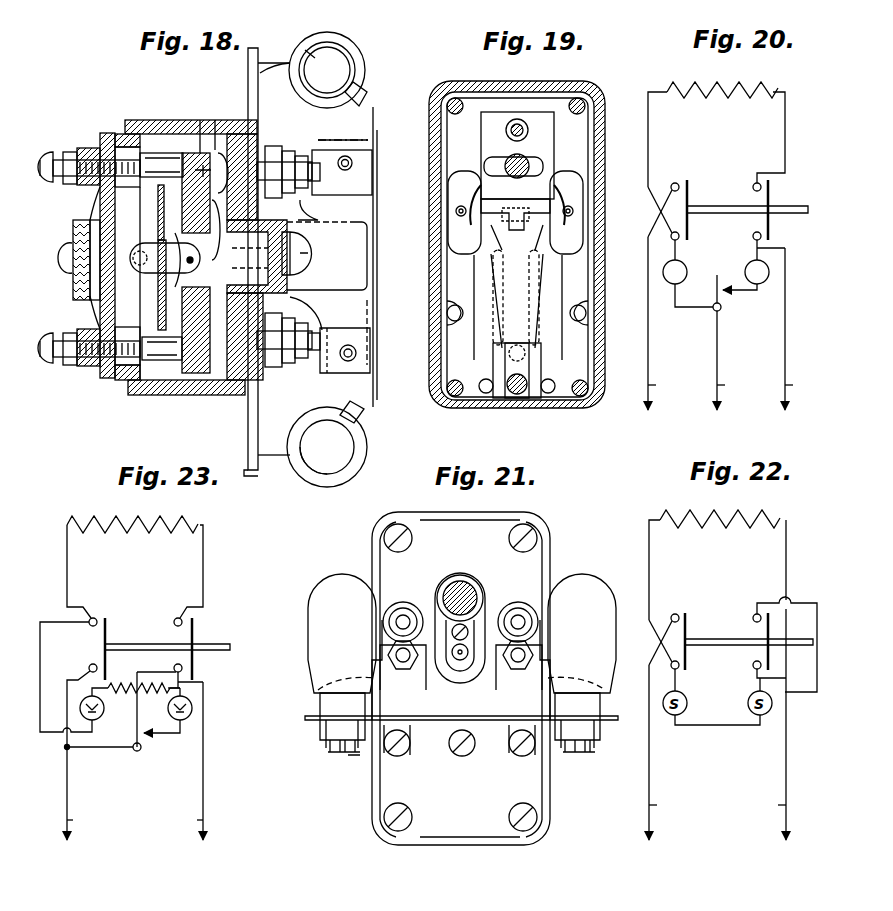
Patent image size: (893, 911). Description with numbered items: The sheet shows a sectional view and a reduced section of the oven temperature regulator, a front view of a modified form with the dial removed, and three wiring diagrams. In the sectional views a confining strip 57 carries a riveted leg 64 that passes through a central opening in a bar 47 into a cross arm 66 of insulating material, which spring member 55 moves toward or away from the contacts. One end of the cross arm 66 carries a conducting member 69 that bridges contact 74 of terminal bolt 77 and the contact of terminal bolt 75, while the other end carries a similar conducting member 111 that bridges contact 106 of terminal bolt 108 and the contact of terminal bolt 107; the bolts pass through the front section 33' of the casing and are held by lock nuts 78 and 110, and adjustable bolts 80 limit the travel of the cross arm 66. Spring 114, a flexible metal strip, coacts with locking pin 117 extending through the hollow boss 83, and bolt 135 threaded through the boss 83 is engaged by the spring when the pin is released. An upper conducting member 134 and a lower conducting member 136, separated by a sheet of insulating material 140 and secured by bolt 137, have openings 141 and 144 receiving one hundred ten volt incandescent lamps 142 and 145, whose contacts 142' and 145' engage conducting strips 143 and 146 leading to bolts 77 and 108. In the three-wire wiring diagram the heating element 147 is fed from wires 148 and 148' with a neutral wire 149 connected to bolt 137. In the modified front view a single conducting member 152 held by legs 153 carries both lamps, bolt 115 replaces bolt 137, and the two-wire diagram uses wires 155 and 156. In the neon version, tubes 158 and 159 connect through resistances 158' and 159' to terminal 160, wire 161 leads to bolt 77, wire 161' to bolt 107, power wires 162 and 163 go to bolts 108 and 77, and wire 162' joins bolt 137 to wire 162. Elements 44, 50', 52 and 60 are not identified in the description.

In FIG. 18, the front section 33' is at (182, 241).
In FIG. 19, the front section 33' is at (517, 256).
In FIG. 21, the front section 33' is at (461, 746).
In FIG. 19, the screw 44 is at (530, 160).
In FIG. 18, the bar 47 is at (160, 318).
In FIG. 19, the bar 47 is at (508, 258).
In FIG. 19, the screw 50' is at (530, 155).
In FIG. 21, the cover plate 52 is at (543, 840).
In FIG. 19, the spring member 55 is at (533, 290).
In FIG. 18, the confining strip 57 is at (140, 300).
In FIG. 19, the confining strip 57 is at (545, 347).
In FIG. 19, the pivot 60 is at (525, 362).
In FIG. 18, the leg 64 is at (152, 210).
In FIG. 18, the cross arm 66 is at (185, 362).
In FIG. 19, the cross arm 66 is at (481, 185).
In FIG. 18, the conducting member 69 is at (200, 135).
In FIG. 19, the conducting member 69 is at (575, 222).
In FIG. 20, the conducting member 69 is at (770, 194).
In FIG. 22, the conducting member 69 is at (770, 622).
In FIG. 23, the conducting member 69 is at (194, 634).
In FIG. 18, the contact 74 is at (213, 125).
In FIG. 20, the terminal bolt 75 is at (754, 176).
In FIG. 22, the terminal bolt 75 is at (753, 608).
In FIG. 23, the terminal bolt 75 is at (175, 618).
In FIG. 18, the terminal bolt 77 is at (320, 140).
In FIG. 20, the terminal bolt 77 is at (753, 236).
In FIG. 22, the terminal bolt 77 is at (753, 665).
In FIG. 23, the terminal bolt 77 is at (182, 668).
In FIG. 18, the lock nuts 78 is at (272, 146).
In FIG. 18, the bolts 80 is at (46, 152).
In FIG. 21, the boss 83 is at (482, 584).
In FIG. 18, the contact 106 is at (218, 372).
In FIG. 20, the terminal bolt 107 is at (677, 183).
In FIG. 22, the terminal bolt 107 is at (676, 614).
In FIG. 23, the terminal bolt 107 is at (96, 617).
In FIG. 18, the terminal bolt 108 is at (325, 333).
In FIG. 20, the terminal bolt 108 is at (672, 240).
In FIG. 22, the terminal bolt 108 is at (678, 669).
In FIG. 23, the terminal bolt 108 is at (89, 667).
In FIG. 18, the lock nuts 110 is at (274, 367).
In FIG. 18, the conducting member 111 is at (205, 365).
In FIG. 19, the conducting member 111 is at (448, 194).
In FIG. 20, the conducting member 111 is at (689, 193).
In FIG. 22, the conducting member 111 is at (687, 626).
In FIG. 23, the conducting member 111 is at (107, 636).
In FIG. 23, the spring 114 is at (142, 717).
In FIG. 21, the bolt 115 is at (462, 757).
In FIG. 21, the pin 117 is at (462, 662).
In FIG. 18, the upper conducting member 134 is at (366, 90).
In FIG. 18, the bolt 135 is at (305, 250).
In FIG. 20, the bolt 135 is at (728, 298).
In FIG. 23, the bolt 135 is at (146, 740).
In FIG. 18, the second conducting member 136 is at (368, 392).
In FIG. 20, the bolt 137 is at (722, 311).
In FIG. 23, the bolt 137 is at (137, 752).
In FIG. 18, the sheet of insulating material 140 is at (374, 296).
In FIG. 18, the opening 141 is at (322, 52).
In FIG. 20, the incandescent lamp 142 is at (781, 262).
In FIG. 21, the incandescent lamp 142 is at (586, 626).
In FIG. 21, the contact 142' is at (593, 723).
In FIG. 18, the conducting strip 143 is at (272, 70).
In FIG. 21, the conducting strip 143 is at (578, 758).
In FIG. 18, the opening 144 is at (322, 465).
In FIG. 20, the incandescent lamp 145 is at (695, 273).
In FIG. 21, the incandescent lamp 145 is at (322, 633).
In FIG. 21, the contact 145' is at (324, 745).
In FIG. 18, the conducting strip 146 is at (273, 455).
In FIG. 21, the conducting strip 146 is at (353, 758).
In FIG. 20, the heating element 147 is at (703, 98).
In FIG. 22, the heating element 147 is at (702, 525).
In FIG. 23, the heating element 147 is at (130, 528).
In FIG. 20, the wire 148 is at (666, 251).
In FIG. 20, the wire 148' is at (805, 329).
In FIG. 20, the neutral wire 149 is at (736, 342).
In FIG. 21, the conducting member 152 is at (305, 728).
In FIG. 21, the legs 153 is at (405, 752).
In FIG. 22, the wire 155 is at (669, 680).
In FIG. 22, the wire 156 is at (765, 756).
In FIG. 23, the neon tube 158 is at (102, 713).
In FIG. 23, the resistance 158' is at (123, 699).
In FIG. 23, the neon tube 159 is at (182, 726).
In FIG. 23, the resistance 159' is at (204, 692).
In FIG. 23, the terminal 160 is at (158, 709).
In FIG. 23, the wire 161 is at (144, 667).
In FIG. 23, the wire 161' is at (61, 696).
In FIG. 23, the wire 162 is at (86, 793).
In FIG. 23, the wire 162' is at (99, 763).
In FIG. 23, the wire 163 is at (185, 761).